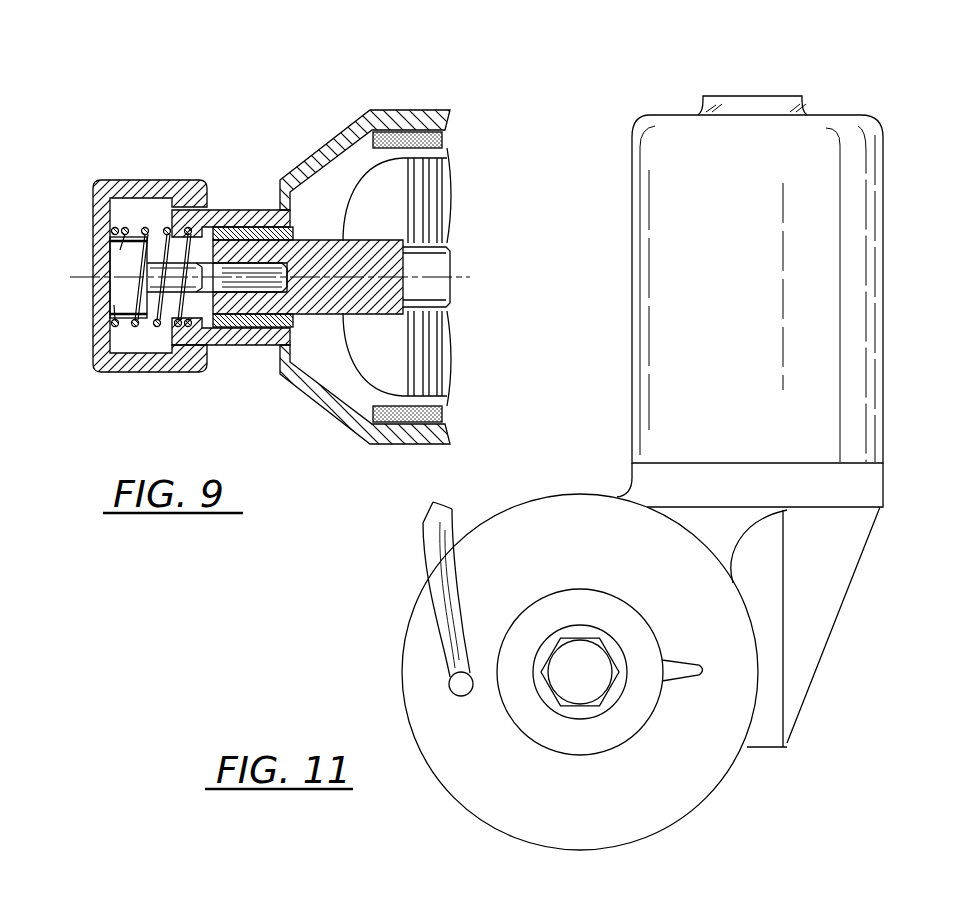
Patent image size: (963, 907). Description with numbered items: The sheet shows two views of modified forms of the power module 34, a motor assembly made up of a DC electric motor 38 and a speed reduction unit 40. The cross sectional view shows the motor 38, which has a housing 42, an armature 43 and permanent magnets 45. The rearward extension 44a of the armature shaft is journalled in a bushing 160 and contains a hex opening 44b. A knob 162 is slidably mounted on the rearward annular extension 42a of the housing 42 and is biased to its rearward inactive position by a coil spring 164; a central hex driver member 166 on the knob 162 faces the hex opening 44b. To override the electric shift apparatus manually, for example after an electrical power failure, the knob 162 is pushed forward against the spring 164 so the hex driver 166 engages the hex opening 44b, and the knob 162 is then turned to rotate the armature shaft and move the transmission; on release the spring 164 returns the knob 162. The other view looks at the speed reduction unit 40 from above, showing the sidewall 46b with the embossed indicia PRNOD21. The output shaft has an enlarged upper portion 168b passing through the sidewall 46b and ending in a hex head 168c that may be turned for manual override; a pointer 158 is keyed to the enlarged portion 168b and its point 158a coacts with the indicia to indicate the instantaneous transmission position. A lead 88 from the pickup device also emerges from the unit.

In FIG. 9, the DC electric motor 38 is at (423, 80).
In FIG. 9, the motor housing 42 is at (378, 110).
In FIG. 11, the motor housing 42 is at (761, 317).
In FIG. 9, the rearward annular extension of motor housing 42a is at (224, 208).
In FIG. 9, the armature 43 is at (430, 189).
In FIG. 9, the rearward extension of armature shaft 44a is at (253, 327).
In FIG. 9, the hex opening 44b is at (290, 290).
In FIG. 9, the permanent magnets 45 is at (445, 140).
In FIG. 9, the bushing 160 is at (246, 227).
In FIG. 9, the knob 162 is at (153, 180).
In FIG. 9, the coil spring 164 is at (142, 327).
In FIG. 9, the hex driver member 166 is at (157, 281).
In FIG. 11, the power module 34 is at (612, 392).
In FIG. 11, the speed reduction unit 40 is at (549, 522).
In FIG. 11, the speed reduction unit sidewall 46b is at (619, 549).
In FIG. 11, the lead 88 is at (430, 530).
In FIG. 11, the pointer 158 is at (643, 617).
In FIG. 11, the point of pointer 158a is at (688, 663).
In FIG. 11, the enlarged upper shaft portion 168b is at (573, 623).
In FIG. 11, the hex head 168c is at (567, 683).